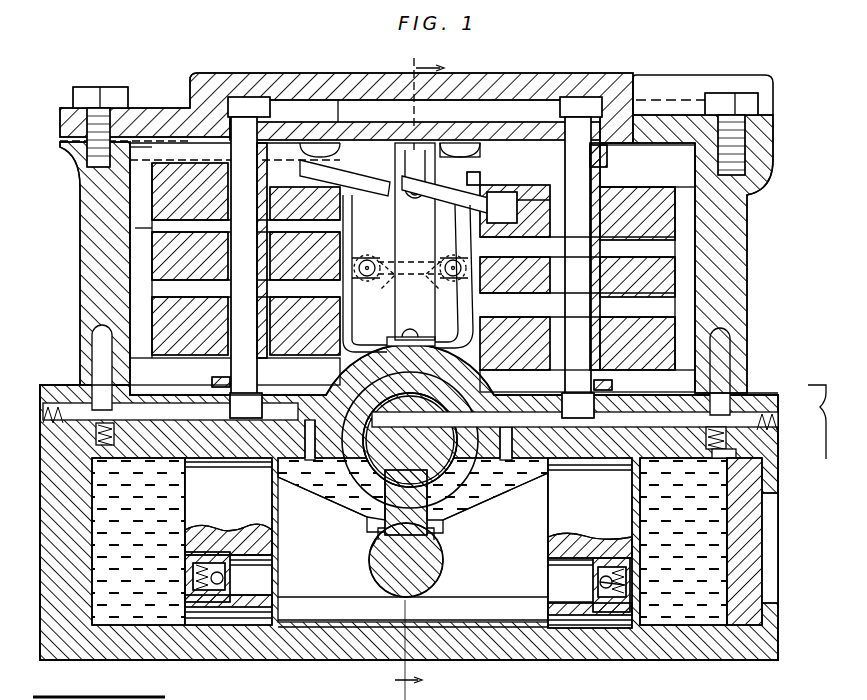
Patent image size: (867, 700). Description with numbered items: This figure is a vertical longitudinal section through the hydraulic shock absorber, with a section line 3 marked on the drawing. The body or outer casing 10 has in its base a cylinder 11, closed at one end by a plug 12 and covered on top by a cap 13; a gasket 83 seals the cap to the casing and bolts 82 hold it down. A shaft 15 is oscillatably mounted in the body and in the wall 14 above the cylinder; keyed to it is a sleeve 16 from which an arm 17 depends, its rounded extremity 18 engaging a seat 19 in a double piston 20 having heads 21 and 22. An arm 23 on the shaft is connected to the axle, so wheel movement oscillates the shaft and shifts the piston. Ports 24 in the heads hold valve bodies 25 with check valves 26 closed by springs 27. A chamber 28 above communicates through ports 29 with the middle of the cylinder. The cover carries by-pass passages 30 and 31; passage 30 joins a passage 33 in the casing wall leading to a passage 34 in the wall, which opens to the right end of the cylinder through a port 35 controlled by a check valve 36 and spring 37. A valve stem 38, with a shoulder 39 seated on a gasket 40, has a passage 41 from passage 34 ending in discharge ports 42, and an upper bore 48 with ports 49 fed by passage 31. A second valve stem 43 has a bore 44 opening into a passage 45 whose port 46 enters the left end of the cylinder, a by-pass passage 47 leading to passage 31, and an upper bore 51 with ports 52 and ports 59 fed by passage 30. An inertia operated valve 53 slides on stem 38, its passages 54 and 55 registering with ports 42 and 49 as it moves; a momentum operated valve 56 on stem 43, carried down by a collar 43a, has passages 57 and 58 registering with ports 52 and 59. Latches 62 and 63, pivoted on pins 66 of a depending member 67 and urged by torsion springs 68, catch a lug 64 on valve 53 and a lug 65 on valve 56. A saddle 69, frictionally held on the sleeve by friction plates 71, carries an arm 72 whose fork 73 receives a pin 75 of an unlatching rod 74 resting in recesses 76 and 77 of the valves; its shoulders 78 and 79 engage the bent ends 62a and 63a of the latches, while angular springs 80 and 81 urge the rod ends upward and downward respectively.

The section line 3 is at (419, 370).
The body or outer casing 10 is at (748, 246).
The cylinder 11 is at (675, 640).
The plug 12 is at (758, 528).
The cap 13 is at (583, 78).
The wall 14 is at (700, 470).
The shaft 15 is at (370, 522).
The sleeve 16 is at (340, 395).
The arm 17 is at (378, 532).
The rounded extremity 18 is at (440, 566).
The seat 19 is at (445, 541).
The double piston 20 is at (510, 392).
The piston head 21 is at (408, 543).
The piston head 22 is at (408, 531).
The arm 23 is at (821, 413).
The ports 24 is at (408, 585).
The valve bodies 25 is at (203, 625).
The check valves 26 is at (228, 562).
The spring 27 is at (626, 585).
The chamber 28 is at (647, 256).
The ports 29 is at (297, 385).
The by-pass passage 30 is at (300, 110).
The by-pass passage 31 is at (497, 112).
The passage 33 is at (722, 340).
The passage 34 is at (575, 420).
The port 35 is at (736, 455).
The check valve 36 is at (724, 446).
The spring 37 is at (75, 395).
The valve stem 38 is at (530, 200).
The shoulder 39 is at (292, 370).
The gasket 40 is at (412, 411).
The passage 41 is at (663, 330).
The discharge ports 42 is at (612, 309).
The valve stem 43 is at (235, 264).
The collar 43a is at (225, 157).
The bore 44 is at (240, 330).
The passage 45 is at (170, 413).
The port 46 is at (98, 440).
The by-pass passage 47 is at (100, 335).
The bore 48 is at (620, 85).
The ports 49 is at (644, 174).
The bore 51 is at (245, 200).
The ports 52 is at (295, 237).
The inertia operated valve 53 is at (667, 330).
The radially extending passages 54 is at (577, 331).
The radially extending passages 55 is at (577, 249).
The momentum operated valve 56 is at (95, 190).
The upper passages 57 is at (135, 228).
The lower passages 58 is at (165, 292).
The ports 59 is at (288, 297).
The latch 62 is at (490, 258).
The angularly bent end 62a is at (478, 170).
The latch 63 is at (385, 225).
The angularly bent end 63a is at (412, 200).
The lug 64 is at (492, 310).
The lug 65 is at (367, 267).
The pins 66 is at (380, 262).
The depending member 67 is at (266, 150).
The torsion springs 68 is at (378, 278).
The saddle 69 is at (372, 345).
The friction plates 71 is at (448, 320).
The arm 72 is at (411, 326).
The fork 73 is at (412, 160).
The unlatching rod 74 is at (320, 175).
The pin 75 is at (417, 180).
The recess 76 is at (500, 190).
The recess 77 is at (338, 100).
The shoulder 78 is at (465, 185).
The shoulder 79 is at (393, 180).
The angular spring 80 is at (612, 164).
The angular spring 81 is at (300, 170).
The bolts 82 is at (112, 95).
The gasket 83 is at (772, 130).